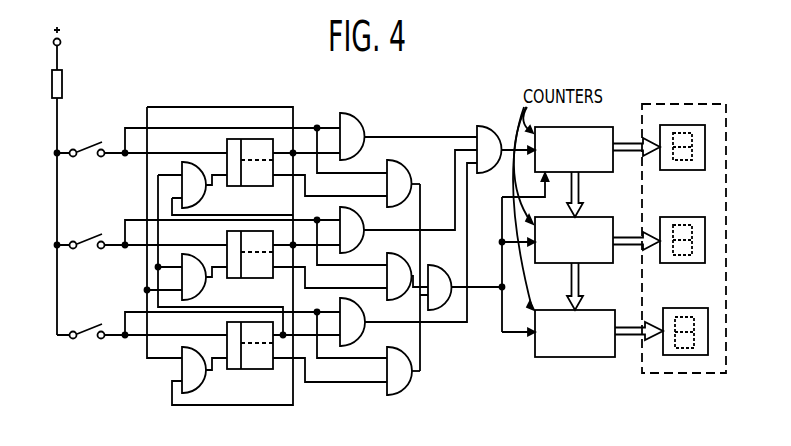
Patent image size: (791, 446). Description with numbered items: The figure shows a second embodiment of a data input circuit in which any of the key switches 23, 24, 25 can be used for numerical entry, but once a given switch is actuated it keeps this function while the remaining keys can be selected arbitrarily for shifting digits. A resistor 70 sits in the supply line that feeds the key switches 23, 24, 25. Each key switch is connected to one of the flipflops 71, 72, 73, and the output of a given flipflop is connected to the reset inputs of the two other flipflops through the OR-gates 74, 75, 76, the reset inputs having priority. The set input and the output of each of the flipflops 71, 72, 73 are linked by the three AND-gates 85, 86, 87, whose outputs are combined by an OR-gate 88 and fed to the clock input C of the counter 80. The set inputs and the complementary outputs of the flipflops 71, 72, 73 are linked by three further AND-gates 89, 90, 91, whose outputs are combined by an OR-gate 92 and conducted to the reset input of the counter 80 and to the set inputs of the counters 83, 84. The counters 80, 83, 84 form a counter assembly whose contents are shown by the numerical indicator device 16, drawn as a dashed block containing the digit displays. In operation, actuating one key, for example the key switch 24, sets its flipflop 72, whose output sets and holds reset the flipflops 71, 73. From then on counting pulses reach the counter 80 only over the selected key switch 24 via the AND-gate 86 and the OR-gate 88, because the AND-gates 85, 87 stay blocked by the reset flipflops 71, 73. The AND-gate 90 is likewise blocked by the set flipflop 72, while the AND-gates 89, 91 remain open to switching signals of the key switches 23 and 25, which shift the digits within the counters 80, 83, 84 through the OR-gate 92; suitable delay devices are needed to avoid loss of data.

The numerical indicator device 16 is at (682, 374).
The key switch 23 is at (90, 139).
The key switch 24 is at (90, 231).
The key switch 25 is at (90, 321).
The resistor 70 is at (62, 81).
The flipflop 71 is at (254, 177).
The flipflop 72 is at (254, 269).
The flipflop 73 is at (254, 360).
The OR-gate 74 is at (201, 190).
The OR-gate 75 is at (201, 282).
The OR-gate 76 is at (201, 384).
The counter 80 is at (577, 131).
The counter 83 is at (593, 226).
The counter 84 is at (595, 320).
The AND-gate 85 is at (357, 121).
The AND-gate 86 is at (356, 223).
The AND-gate 87 is at (355, 313).
The OR-gate 88 is at (484, 129).
The AND-gate 89 is at (402, 168).
The AND-gate 90 is at (398, 262).
The AND-gate 91 is at (397, 352).
The OR-gate 92 is at (437, 268).